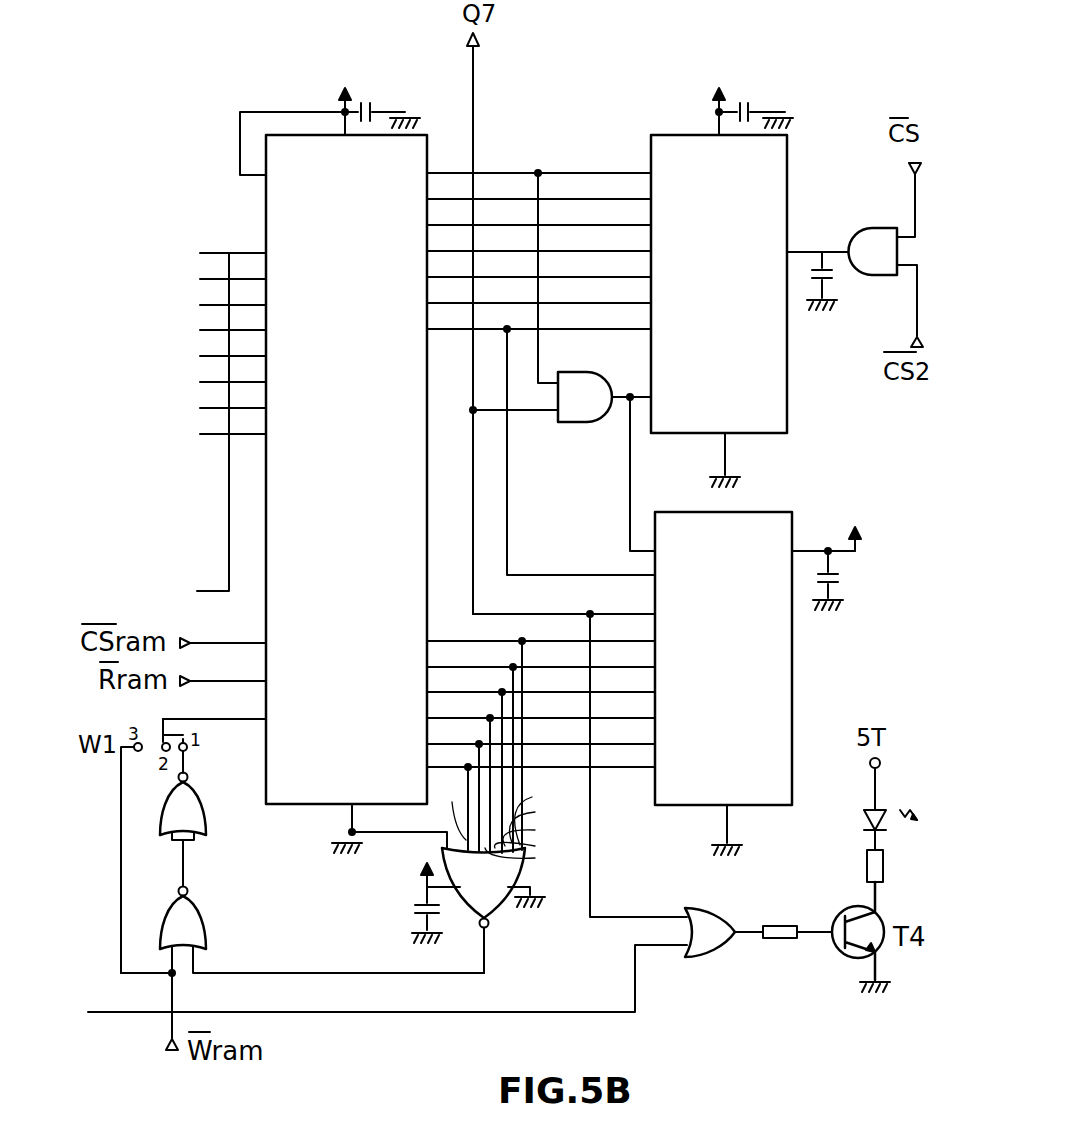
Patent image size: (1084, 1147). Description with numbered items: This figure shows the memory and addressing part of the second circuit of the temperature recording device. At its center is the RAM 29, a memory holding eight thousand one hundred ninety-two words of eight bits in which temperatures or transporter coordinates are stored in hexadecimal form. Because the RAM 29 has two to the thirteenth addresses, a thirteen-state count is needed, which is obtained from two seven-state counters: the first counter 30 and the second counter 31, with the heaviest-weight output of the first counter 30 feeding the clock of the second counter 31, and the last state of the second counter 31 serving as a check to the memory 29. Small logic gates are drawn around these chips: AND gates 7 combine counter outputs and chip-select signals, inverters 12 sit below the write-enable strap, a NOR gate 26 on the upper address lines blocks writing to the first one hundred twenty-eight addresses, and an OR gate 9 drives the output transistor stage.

The RAM 29 is at (308, 452).
The first counter 30 is at (710, 269).
The second counter 31 is at (749, 658).
The AND gate 7 is at (740, 357).
The inverter 12 is at (302, 894).
The NOR gate 26 is at (452, 875).
The OR gate 9 is at (758, 932).